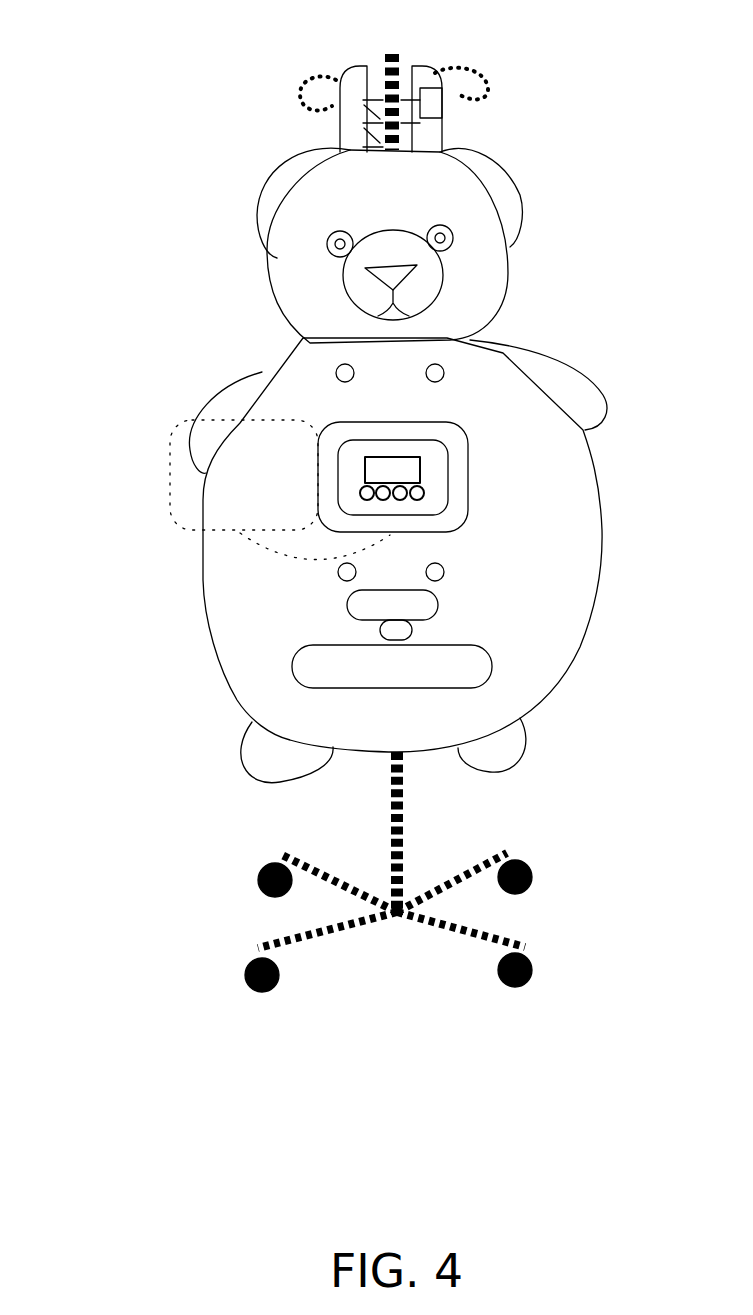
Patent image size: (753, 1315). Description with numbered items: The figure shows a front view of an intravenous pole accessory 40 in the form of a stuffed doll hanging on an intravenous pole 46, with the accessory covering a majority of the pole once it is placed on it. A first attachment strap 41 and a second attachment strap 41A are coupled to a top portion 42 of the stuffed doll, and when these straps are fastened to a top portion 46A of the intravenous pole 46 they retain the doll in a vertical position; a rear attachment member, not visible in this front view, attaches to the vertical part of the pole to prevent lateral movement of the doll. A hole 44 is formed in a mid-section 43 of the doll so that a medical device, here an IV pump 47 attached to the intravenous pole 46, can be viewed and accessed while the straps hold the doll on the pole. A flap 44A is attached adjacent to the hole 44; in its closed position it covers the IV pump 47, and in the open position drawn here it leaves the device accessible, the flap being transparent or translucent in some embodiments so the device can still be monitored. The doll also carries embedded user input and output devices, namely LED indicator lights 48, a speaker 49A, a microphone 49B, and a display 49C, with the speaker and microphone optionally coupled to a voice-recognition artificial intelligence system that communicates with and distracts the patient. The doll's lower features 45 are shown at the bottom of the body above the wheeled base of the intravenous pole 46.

The intravenous pole accessory 40 is at (422, 1232).
The first attachment strap 41 is at (356, 131).
The second attachment strap 41A is at (420, 127).
The top portion 42 is at (266, 255).
The mid-section 43 is at (278, 365).
The hole 44 is at (510, 487).
The flap 44A is at (167, 478).
The feet 45 is at (252, 747).
The intravenous pole 46 is at (395, 800).
The top portion of the intravenous pole 46A is at (480, 75).
The IV pump 47 is at (438, 497).
The LED indicator lights 48 is at (438, 573).
The speaker 49A is at (438, 612).
The microphone 49B is at (380, 630).
The display 49C is at (297, 664).